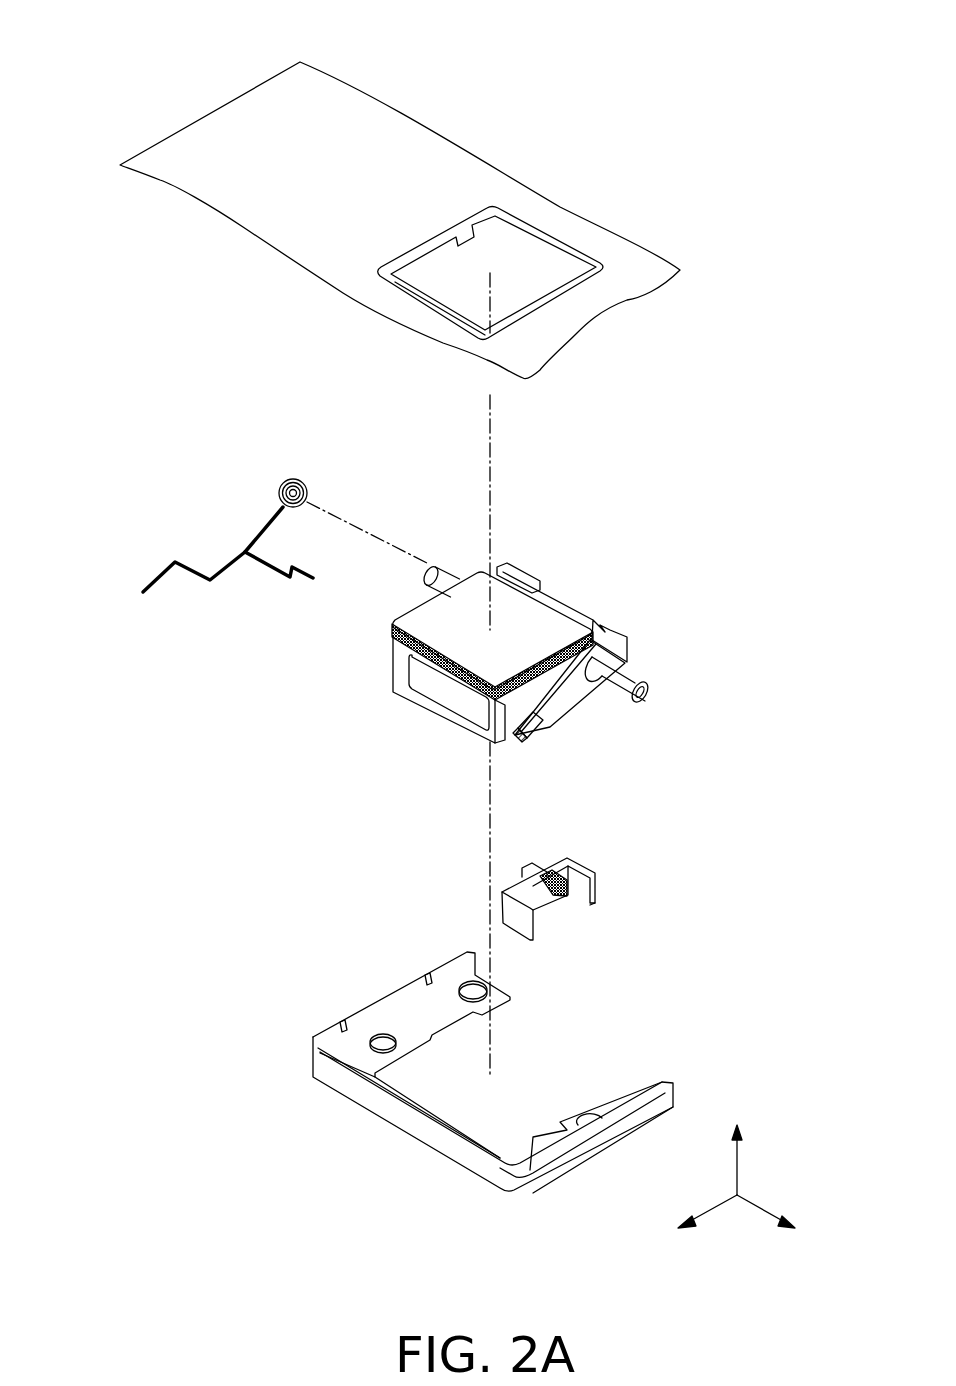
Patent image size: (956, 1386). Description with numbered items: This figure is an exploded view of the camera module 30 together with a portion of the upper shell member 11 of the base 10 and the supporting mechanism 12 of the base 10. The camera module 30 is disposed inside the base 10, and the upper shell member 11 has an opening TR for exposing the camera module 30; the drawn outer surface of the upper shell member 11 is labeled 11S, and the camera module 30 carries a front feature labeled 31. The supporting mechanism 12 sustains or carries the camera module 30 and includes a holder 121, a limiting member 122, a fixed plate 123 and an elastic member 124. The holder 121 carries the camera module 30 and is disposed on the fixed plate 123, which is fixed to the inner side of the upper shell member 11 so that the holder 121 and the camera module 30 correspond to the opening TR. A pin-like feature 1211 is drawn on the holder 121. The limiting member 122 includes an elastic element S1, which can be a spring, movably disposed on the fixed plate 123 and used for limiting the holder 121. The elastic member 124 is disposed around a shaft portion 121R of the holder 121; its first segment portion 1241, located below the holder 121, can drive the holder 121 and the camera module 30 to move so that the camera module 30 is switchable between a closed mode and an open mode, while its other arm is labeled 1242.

The base 10 is at (87, 24).
The upper shell member 11 is at (202, 125).
The surface of housing 11S is at (287, 100).
The opening TR is at (535, 245).
The camera module 30 is at (500, 667).
The opening of key cap 31 is at (432, 680).
The supporting mechanism 12 is at (240, 758).
The holder 121 is at (581, 685).
The shaft portion 121R is at (632, 674).
The pivot pin 1211 is at (535, 732).
The limiting member 122 is at (621, 915).
The elastic element S1 is at (565, 897).
The fixed plate 123 is at (572, 1133).
The elastic member 124 is at (189, 537).
The first segment portion 1241 is at (272, 575).
The second arm of spring 1242 is at (175, 562).